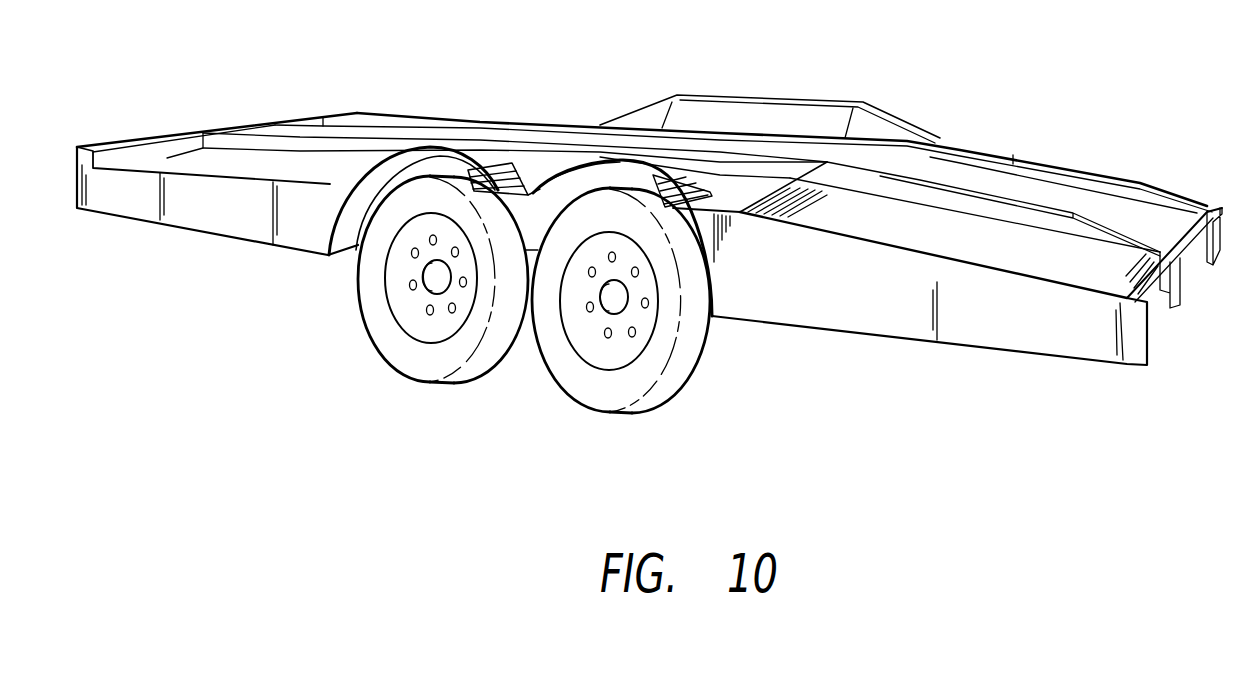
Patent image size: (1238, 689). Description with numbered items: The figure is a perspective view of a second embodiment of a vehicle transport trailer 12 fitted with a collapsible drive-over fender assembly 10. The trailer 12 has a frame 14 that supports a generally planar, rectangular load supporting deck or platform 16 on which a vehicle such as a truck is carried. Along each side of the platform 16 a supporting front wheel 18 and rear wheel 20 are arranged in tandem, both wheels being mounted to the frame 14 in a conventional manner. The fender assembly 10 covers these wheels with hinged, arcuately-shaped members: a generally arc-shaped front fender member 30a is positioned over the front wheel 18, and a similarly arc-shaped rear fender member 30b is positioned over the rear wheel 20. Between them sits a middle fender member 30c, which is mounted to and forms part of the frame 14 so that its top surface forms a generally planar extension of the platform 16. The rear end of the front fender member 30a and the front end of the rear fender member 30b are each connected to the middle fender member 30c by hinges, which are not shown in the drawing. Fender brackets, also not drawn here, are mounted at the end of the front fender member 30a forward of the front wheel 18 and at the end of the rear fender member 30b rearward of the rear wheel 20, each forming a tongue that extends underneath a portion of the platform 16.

The fender assembly 10 is at (537, 155).
The vehicle transport trailer 12 is at (1036, 132).
The frame 14 is at (882, 297).
The load supporting deck or platform 16 is at (953, 224).
The front wheel 18 is at (417, 320).
The rear wheel 20 is at (592, 333).
The front fender member 30a is at (450, 155).
The rear fender member 30b is at (640, 163).
The middle fender member 30c is at (518, 190).